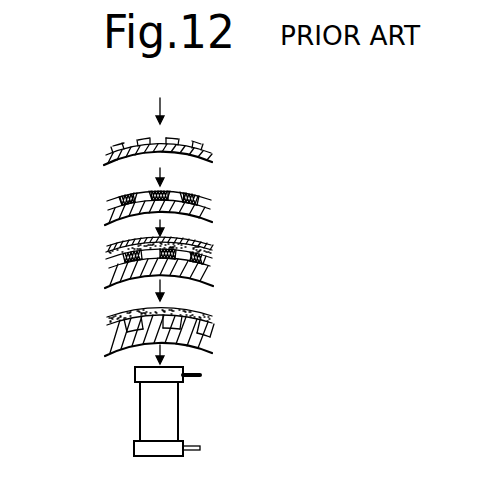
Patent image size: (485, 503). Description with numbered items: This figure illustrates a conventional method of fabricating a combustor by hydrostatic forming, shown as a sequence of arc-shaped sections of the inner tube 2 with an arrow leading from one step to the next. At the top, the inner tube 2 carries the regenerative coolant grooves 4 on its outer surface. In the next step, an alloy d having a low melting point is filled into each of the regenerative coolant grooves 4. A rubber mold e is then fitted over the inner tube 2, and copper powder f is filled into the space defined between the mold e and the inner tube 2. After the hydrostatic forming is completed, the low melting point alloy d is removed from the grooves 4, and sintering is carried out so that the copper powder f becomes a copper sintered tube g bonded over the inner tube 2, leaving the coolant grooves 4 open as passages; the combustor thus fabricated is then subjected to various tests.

The inner tube 2 is at (204, 154).
The regenerative coolant grooves 4 is at (189, 140).
The low melting point alloy d is at (197, 198).
The rubber mold e is at (205, 245).
The copper powder f is at (208, 262).
The copper sintered tube g is at (208, 325).